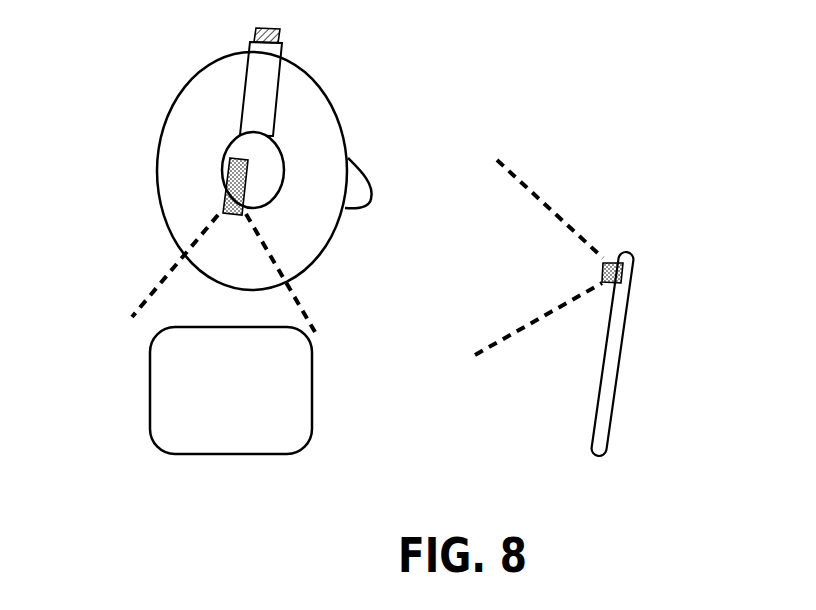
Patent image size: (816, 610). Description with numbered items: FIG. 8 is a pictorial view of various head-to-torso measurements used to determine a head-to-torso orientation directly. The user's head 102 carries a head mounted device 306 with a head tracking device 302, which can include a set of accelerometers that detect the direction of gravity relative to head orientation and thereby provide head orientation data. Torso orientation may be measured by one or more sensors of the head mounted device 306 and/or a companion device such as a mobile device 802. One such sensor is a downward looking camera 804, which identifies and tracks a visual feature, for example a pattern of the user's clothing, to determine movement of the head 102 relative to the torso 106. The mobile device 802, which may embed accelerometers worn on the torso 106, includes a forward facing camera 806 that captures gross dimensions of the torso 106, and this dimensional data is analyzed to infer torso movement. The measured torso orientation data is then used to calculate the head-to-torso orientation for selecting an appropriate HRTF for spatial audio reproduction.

The head 102 is at (168, 198).
The torso 106 is at (150, 374).
The head tracking device 302 is at (272, 31).
The head mounted device 306 is at (245, 82).
The mobile device 802 is at (613, 403).
The downward looking camera 804 is at (223, 172).
The forward facing camera 806 is at (620, 275).